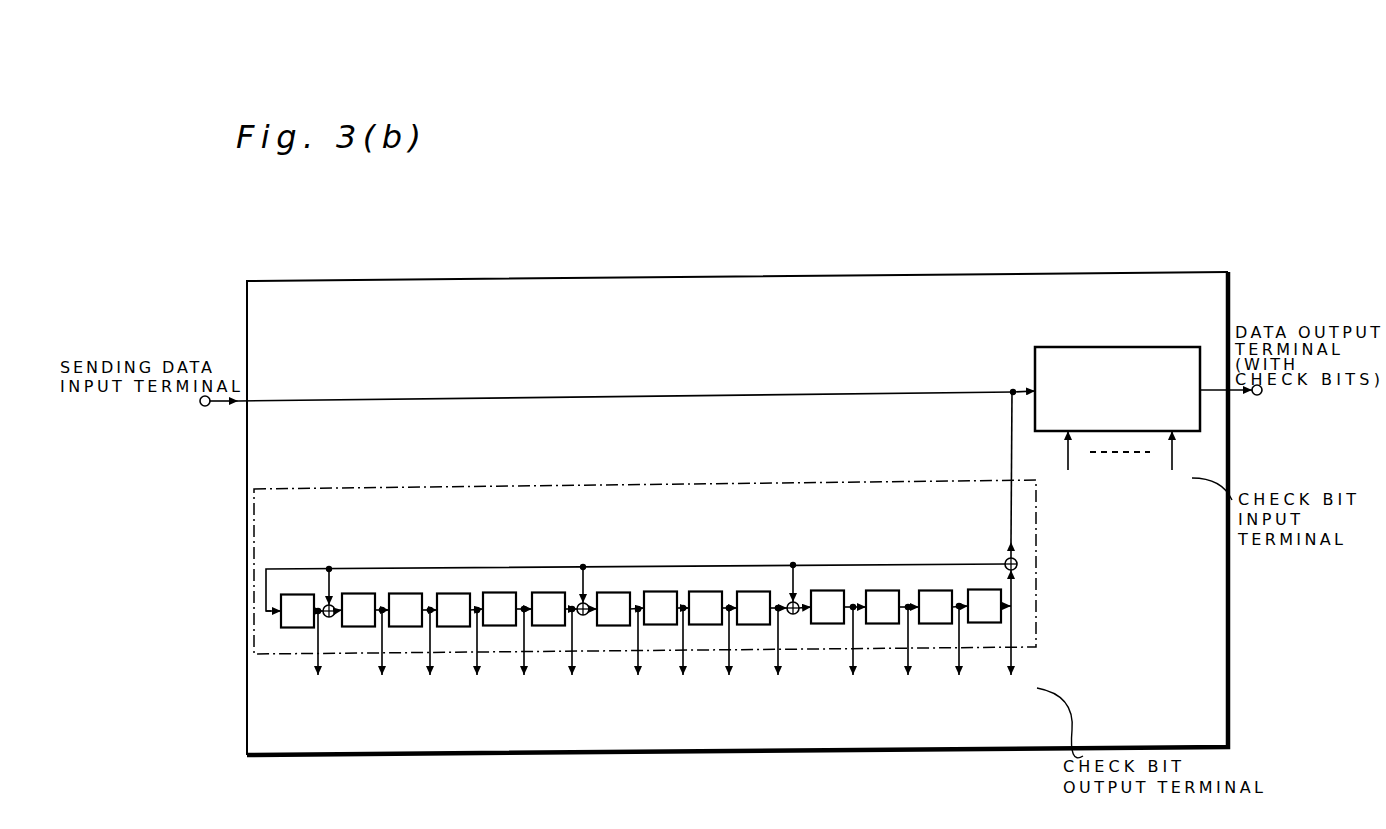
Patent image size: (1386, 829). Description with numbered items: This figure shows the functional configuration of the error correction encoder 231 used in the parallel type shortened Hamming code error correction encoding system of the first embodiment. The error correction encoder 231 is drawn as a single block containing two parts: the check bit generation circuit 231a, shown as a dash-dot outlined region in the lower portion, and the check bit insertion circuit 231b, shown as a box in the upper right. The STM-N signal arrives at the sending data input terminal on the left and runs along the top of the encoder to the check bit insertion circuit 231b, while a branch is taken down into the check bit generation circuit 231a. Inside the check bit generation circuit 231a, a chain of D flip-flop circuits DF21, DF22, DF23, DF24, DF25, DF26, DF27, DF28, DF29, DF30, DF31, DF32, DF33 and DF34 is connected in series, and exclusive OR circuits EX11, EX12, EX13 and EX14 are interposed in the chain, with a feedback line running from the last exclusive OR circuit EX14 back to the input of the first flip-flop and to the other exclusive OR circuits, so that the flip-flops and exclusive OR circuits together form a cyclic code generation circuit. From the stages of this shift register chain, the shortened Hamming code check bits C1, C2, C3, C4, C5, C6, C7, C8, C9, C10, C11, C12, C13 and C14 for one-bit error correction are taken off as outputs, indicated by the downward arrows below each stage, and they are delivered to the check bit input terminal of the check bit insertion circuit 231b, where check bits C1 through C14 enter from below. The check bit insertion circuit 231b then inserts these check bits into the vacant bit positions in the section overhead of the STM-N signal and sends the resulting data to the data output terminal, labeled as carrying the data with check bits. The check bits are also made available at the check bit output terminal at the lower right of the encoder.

The error correction encoder 231 is at (915, 238).
The check bit generation circuit 231a is at (278, 488).
The check bit insertion circuit 231b is at (1099, 346).
The D flip-flop circuit DF21 is at (296, 595).
The D flip-flop circuit DF22 is at (360, 594).
The D flip-flop circuit DF23 is at (405, 594).
The D flip-flop circuit DF24 is at (451, 594).
The D flip-flop circuit DF25 is at (500, 593).
The D flip-flop circuit DF26 is at (545, 593).
The D flip-flop circuit DF27 is at (612, 593).
The D flip-flop circuit DF28 is at (660, 592).
The D flip-flop circuit DF29 is at (708, 592).
The D flip-flop circuit DF30 is at (752, 592).
The D flip-flop circuit DF31 is at (825, 591).
The D flip-flop circuit DF32 is at (880, 591).
The D flip-flop circuit DF33 is at (936, 591).
The D flip-flop circuit DF34 is at (1001, 617).
The exclusive OR circuit EX11 is at (331, 618).
The exclusive OR circuit EX12 is at (585, 616).
The exclusive OR circuit EX13 is at (795, 615).
The exclusive OR circuit EX14 is at (1017, 564).
The check bit C1 is at (691, 587).
The check bit C2 is at (378, 656).
The check bit C3 is at (426, 656).
The check bit C4 is at (474, 656).
The check bit C5 is at (520, 655).
The check bit C6 is at (568, 655).
The check bit C7 is at (637, 655).
The check bit C8 is at (683, 655).
The check bit C9 is at (729, 655).
The check bit C10 is at (781, 655).
The check bit C11 is at (859, 654).
The check bit C12 is at (912, 654).
The check bit C13 is at (963, 654).
The check bit C14 is at (1093, 587).